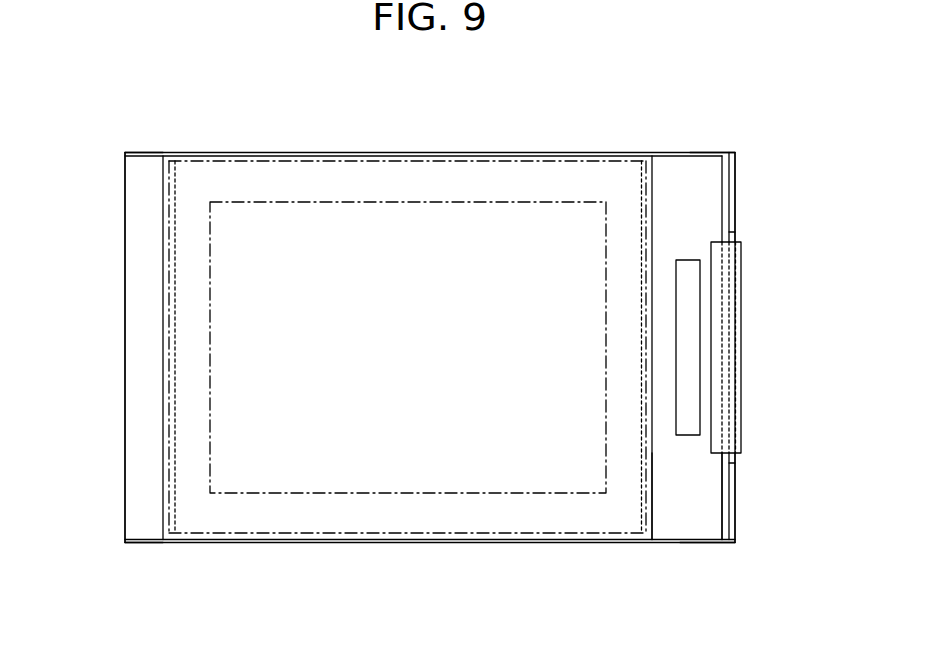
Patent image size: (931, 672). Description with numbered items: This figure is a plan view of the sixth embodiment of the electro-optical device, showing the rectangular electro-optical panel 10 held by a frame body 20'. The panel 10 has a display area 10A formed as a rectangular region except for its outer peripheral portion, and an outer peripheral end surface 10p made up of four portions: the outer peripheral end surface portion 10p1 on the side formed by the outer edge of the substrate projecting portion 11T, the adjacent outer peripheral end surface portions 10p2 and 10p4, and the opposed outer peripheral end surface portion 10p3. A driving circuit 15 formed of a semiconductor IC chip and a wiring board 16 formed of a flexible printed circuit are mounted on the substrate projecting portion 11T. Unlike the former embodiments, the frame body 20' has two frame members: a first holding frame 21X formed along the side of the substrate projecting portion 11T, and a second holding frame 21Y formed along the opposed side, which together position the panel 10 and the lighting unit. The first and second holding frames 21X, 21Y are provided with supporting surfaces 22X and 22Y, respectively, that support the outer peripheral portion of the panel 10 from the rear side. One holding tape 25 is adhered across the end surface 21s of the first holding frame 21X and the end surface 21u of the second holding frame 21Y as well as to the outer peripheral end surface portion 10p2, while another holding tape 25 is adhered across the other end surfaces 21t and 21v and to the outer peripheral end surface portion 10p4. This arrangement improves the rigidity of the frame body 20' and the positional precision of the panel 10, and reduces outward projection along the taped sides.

The electro-optical panel 10 is at (566, 148).
The holding tape 25 is at (205, 152).
The outer peripheral end surface 10p is at (152, 326).
The outer peripheral end surface portion 10p1 is at (722, 218).
The outer peripheral end surface portion 10p2 is at (472, 152).
The outer peripheral end surface portion 10p3 is at (163, 231).
The outer peripheral end surface portion 10p4 is at (362, 543).
The supporting surface 22Y is at (175, 245).
The supporting surface 22X is at (641, 248).
The display area 10A is at (513, 493).
The driving circuit 15 is at (692, 317).
The wiring board 16 is at (737, 386).
The frame body 20' is at (786, 198).
The first holding frame 21X is at (735, 482).
The second holding frame 21Y is at (125, 483).
The substrate projecting portion 11T is at (710, 523).
The end surface 21u is at (140, 152).
The end surface 21s is at (702, 153).
The end surface 21v is at (145, 543).
The end surface 21t is at (685, 543).